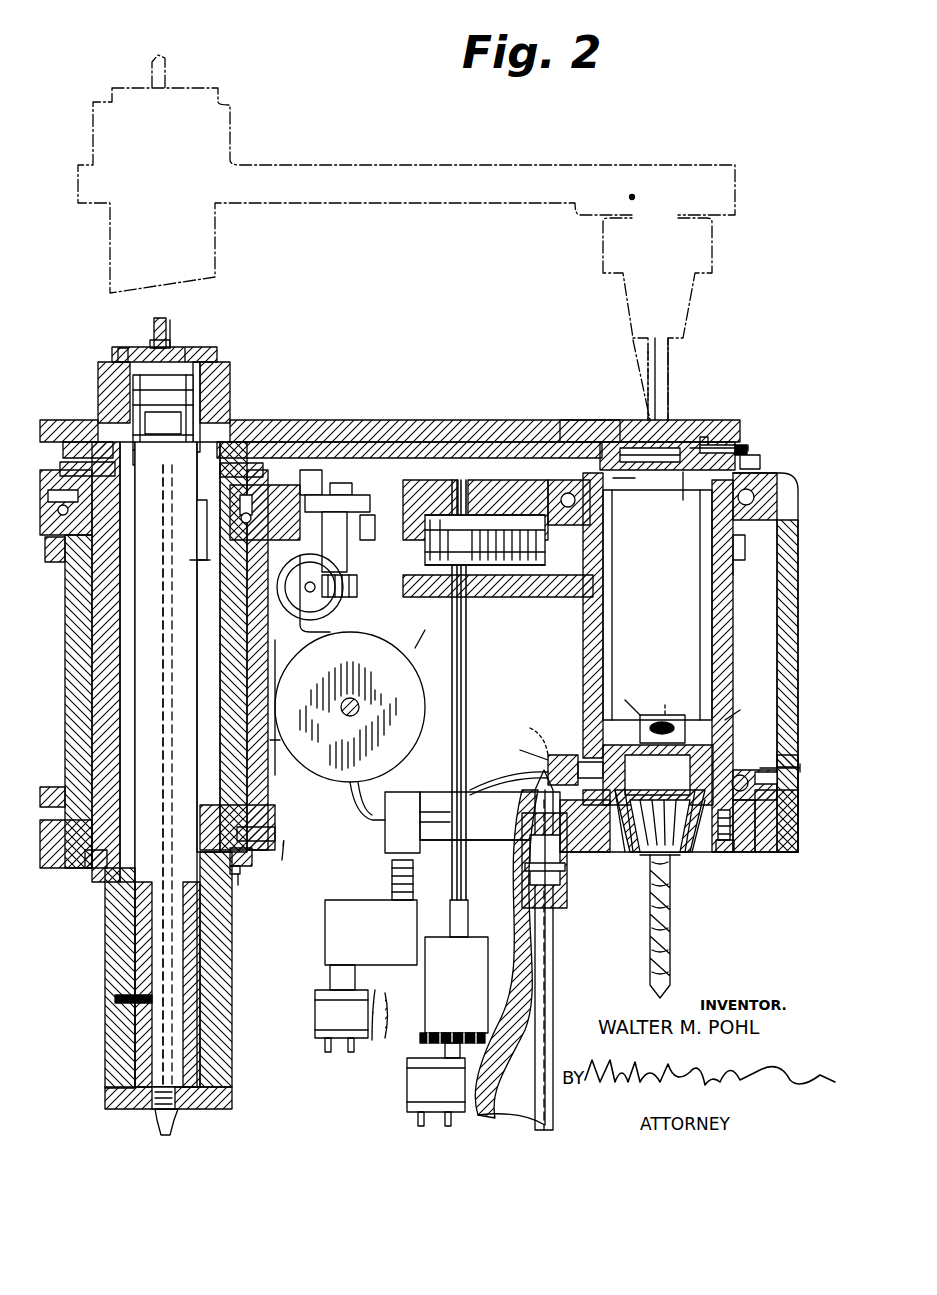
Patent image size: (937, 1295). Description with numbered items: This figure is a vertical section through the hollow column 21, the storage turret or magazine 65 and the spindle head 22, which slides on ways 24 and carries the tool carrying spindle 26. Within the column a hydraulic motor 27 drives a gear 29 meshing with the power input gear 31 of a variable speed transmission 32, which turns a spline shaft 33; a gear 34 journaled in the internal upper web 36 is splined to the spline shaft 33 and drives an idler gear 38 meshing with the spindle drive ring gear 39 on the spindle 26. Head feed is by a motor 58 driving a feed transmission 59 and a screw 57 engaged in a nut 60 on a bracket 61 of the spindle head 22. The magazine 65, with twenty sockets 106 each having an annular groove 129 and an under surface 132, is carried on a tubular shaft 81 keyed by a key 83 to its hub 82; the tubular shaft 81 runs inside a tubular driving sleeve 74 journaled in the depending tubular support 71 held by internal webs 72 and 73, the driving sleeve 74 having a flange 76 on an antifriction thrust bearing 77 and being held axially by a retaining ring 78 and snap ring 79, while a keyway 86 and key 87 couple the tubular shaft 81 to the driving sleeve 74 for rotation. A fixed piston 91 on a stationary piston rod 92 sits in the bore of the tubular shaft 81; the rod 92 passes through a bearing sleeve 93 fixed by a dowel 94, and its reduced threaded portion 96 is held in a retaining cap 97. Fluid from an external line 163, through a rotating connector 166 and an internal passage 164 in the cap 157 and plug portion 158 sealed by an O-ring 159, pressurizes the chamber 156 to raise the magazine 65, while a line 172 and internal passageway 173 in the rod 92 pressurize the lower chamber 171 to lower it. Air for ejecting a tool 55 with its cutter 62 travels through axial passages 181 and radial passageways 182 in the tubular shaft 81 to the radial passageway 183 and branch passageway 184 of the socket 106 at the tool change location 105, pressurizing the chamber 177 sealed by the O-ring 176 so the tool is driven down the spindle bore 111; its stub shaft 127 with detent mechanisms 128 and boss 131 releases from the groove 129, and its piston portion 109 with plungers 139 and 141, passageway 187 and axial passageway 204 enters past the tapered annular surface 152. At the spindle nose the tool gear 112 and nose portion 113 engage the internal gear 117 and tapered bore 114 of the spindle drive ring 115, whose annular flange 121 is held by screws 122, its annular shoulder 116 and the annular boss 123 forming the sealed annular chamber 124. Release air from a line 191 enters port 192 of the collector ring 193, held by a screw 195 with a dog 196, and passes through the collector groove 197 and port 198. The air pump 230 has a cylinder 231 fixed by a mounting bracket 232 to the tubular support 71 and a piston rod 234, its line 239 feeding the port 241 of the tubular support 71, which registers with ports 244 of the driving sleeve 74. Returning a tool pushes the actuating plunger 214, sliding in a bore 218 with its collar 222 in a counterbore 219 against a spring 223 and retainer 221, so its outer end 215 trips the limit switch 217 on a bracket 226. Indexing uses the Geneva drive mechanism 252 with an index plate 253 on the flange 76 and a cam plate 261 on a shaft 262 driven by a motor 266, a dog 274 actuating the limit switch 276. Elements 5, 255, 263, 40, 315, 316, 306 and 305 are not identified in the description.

The tool change location 105 is at (685, 150).
The radial passageway 183 is at (96, 424).
The branch passageway 184 is at (586, 424).
The radial passageway 182 is at (238, 422).
The section line 5 is at (43, 440).
The storage turret 65 is at (330, 362).
The actuating plunger 214 is at (690, 470).
The annular groove 129 is at (650, 470).
The tapered annular surface 152 is at (628, 493).
The spring 223 is at (686, 500).
The socket 106 is at (648, 420).
The under surface 132 is at (655, 420).
The bore 218 is at (686, 420).
The collar 222 is at (704, 437).
The counterbore 219 is at (718, 445).
The retainer 221 is at (748, 447).
The outer end of plunger 215 is at (748, 450).
The limit switch 217 is at (760, 460).
The bracket 226 is at (765, 472).
The external line 163 is at (173, 300).
The rotating connector 166 is at (180, 348).
The cap 157 is at (205, 348).
The O-ring 159 is at (125, 348).
The plug portion 158 is at (217, 352).
The hub 82 is at (230, 375).
The chamber 156 is at (200, 392).
The key 83 is at (98, 400).
The internal passage 164 is at (193, 388).
The fixed piston 91 is at (163, 423).
The tubular support 71 is at (68, 663).
The internal web 72 is at (58, 562).
The lower chamber 171 is at (135, 618).
The axial passage 181 is at (120, 713).
The key 87 is at (215, 518).
The keyway 86 is at (215, 572).
The bearing block 255 is at (60, 510).
The column 21 is at (60, 466).
The internal web 73 is at (48, 790).
The driving sleeve 74 is at (90, 814).
The port 244 is at (90, 852).
The port 241 is at (262, 828).
The retaining ring 78 is at (240, 870).
The snap ring 79 is at (240, 884).
The line 239 is at (296, 858).
The piston rod 92 is at (140, 906).
The tubular shaft 81 is at (118, 940).
The bearing sleeve 93 is at (145, 968).
The dowel 94 is at (115, 998).
The internal passageway 173 is at (165, 1045).
The retaining cap 97 is at (230, 1100).
The threaded portion 96 is at (183, 1109).
The line 172 is at (158, 1128).
The flange 76 is at (262, 508).
The thrust bearing 77 is at (252, 518).
The Geneva drive mechanism 252 is at (318, 475).
The index plate 253 is at (352, 488).
The cam plate 261 is at (370, 504).
The dog 274 is at (383, 524).
The limit switch 276 is at (390, 525).
The pulley 263 is at (310, 587).
The shaft 262 is at (353, 579).
The gear 34 is at (345, 612).
The pump 230 is at (382, 635).
The mounting bracket 232 is at (287, 699).
The cylinder 231 is at (408, 633).
The motor 266 is at (326, 660).
The piston rod 234 is at (359, 707).
The internal upper web 36 is at (436, 484).
The idler gear 38 is at (515, 500).
The O-ring 176 is at (570, 480).
The spline shaft 33 is at (468, 680).
The chamber 177 is at (603, 620).
The spindle bore 111 is at (715, 628).
The spindle 26 is at (735, 660).
The spindle drive ring gear 39 is at (733, 548).
The guide key 40 is at (730, 565).
The stub shaft 127 is at (643, 682).
The plunger 139 is at (640, 725).
The passageway 187 is at (683, 690).
The detent mechanism 128 is at (685, 715).
The boss 131 is at (681, 745).
The plunger 141 is at (751, 705).
The piston portion 109 is at (720, 740).
The collector groove 197 is at (742, 775).
The collector ring 193 is at (790, 755).
The dog 196 is at (798, 758).
The annular chamber 124 is at (768, 777).
The screw 195 is at (816, 780).
The axial passageway 204 is at (541, 730).
The port 198 is at (534, 743).
The port 192 is at (555, 765).
The line 191 is at (505, 772).
The nut 60 is at (385, 850).
The bracket 61 is at (505, 840).
The screw 57 is at (392, 885).
The feed transmission 59 is at (330, 942).
The motor 58 is at (318, 1015).
The terminal 315 is at (325, 1048).
The terminal 316 is at (350, 1052).
The variable speed transmission 32 is at (478, 972).
The power input gear 31 is at (476, 1033).
The gear 29 is at (420, 1045).
The hydraulic motor 27 is at (412, 1090).
The terminal 306 is at (418, 1120).
The terminal 305 is at (451, 1122).
The ways 24 is at (553, 968).
The spindle head 22 is at (785, 852).
The annular boss 123 is at (598, 850).
The internal gear 117 is at (620, 852).
The spindle drive ring 115 is at (638, 852).
The gear 112 is at (652, 852).
The tapered bore 114 is at (690, 852).
The nose portion 113 is at (694, 855).
The annular shoulder 116 is at (724, 845).
The screws 122 is at (722, 852).
The annular flange 121 is at (745, 852).
The tool 55 is at (645, 880).
The cutter 62 is at (665, 985).